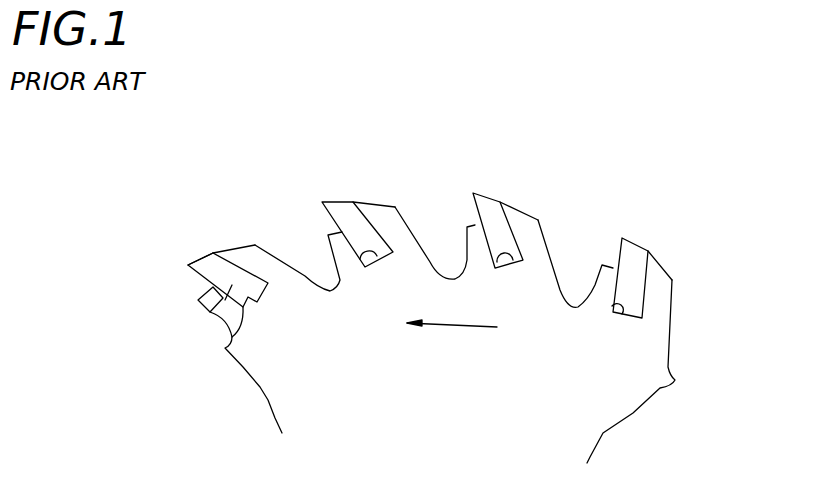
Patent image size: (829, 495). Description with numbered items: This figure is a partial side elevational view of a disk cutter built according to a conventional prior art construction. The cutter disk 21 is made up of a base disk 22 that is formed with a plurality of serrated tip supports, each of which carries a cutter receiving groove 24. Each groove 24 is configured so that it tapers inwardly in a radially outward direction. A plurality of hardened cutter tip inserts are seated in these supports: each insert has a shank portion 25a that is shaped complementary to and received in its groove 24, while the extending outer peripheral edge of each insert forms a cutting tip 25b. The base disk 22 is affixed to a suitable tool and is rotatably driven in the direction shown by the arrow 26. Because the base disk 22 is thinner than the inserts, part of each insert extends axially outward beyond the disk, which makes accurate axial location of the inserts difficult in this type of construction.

The cutter disk 21 is at (298, 180).
The base disk 22 is at (268, 415).
The cutter receiving groove 24 is at (230, 335).
The shank portion 25a is at (200, 310).
The cutting tip 25b is at (188, 265).
The arrow 26 is at (467, 323).